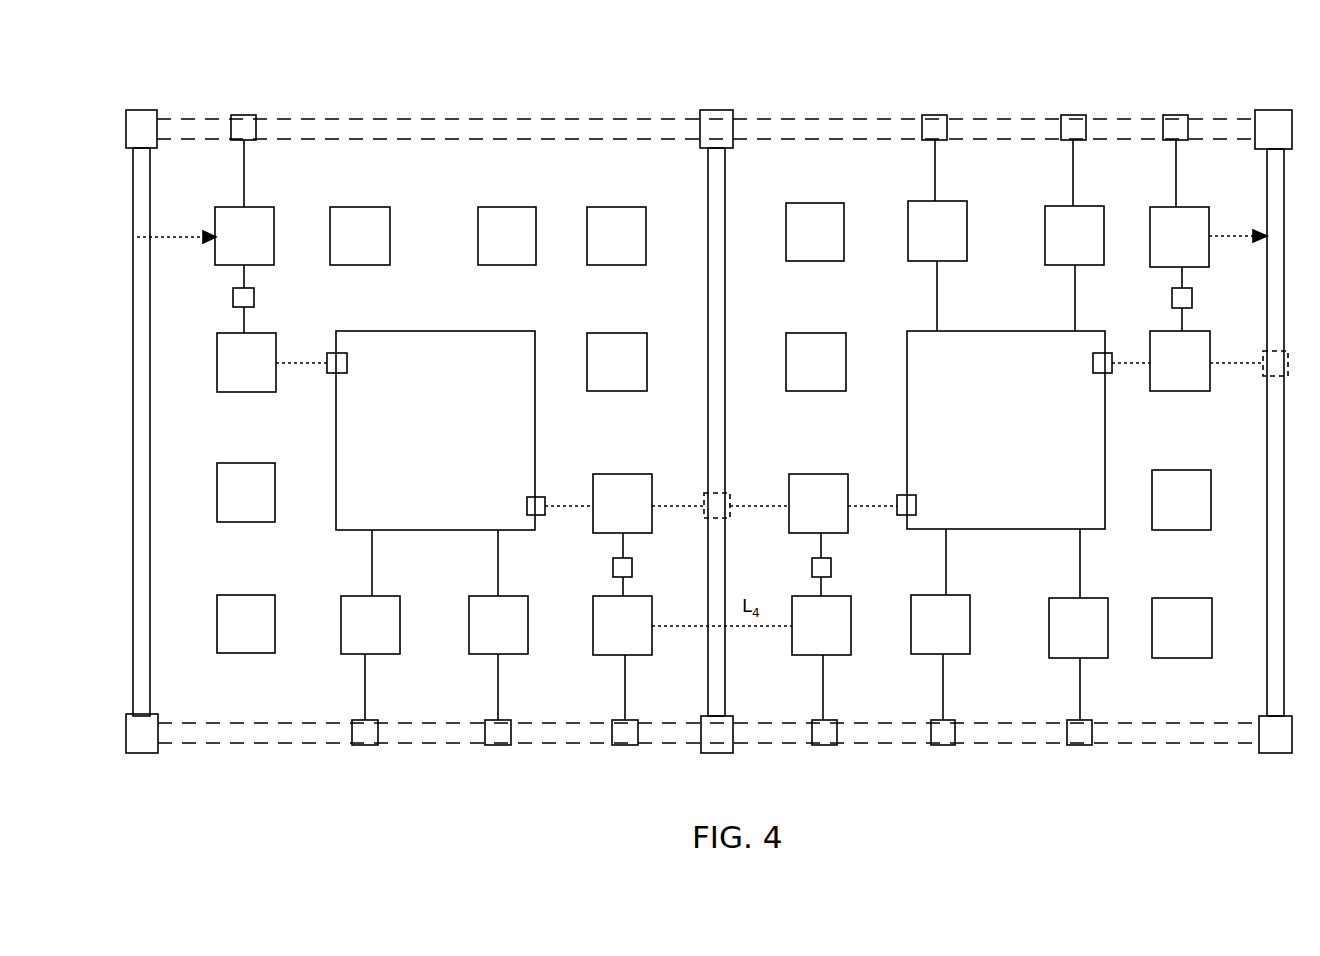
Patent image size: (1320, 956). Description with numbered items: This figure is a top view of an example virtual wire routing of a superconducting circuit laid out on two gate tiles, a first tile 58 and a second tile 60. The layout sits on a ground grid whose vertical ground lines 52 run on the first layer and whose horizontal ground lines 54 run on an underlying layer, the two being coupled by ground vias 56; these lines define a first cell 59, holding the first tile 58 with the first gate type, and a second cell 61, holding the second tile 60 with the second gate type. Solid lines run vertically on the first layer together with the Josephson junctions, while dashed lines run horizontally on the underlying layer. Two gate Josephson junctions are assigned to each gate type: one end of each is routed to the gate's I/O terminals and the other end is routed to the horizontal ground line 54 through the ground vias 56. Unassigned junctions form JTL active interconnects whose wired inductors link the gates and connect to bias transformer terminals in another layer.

The vertical ground lines 52 is at (150, 450).
The horizontal ground lines 54 is at (505, 115).
The ground vias 56 is at (143, 110).
The first tile 58 is at (608, 185).
The first cell 59 is at (223, 558).
The second tile 60 is at (818, 185).
The second cell 61 is at (1204, 564).